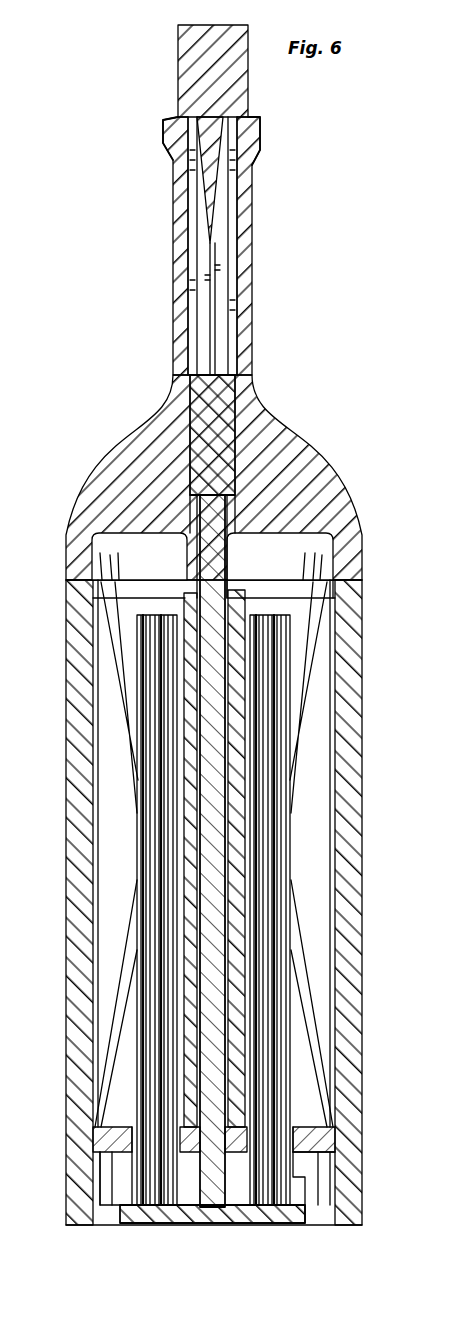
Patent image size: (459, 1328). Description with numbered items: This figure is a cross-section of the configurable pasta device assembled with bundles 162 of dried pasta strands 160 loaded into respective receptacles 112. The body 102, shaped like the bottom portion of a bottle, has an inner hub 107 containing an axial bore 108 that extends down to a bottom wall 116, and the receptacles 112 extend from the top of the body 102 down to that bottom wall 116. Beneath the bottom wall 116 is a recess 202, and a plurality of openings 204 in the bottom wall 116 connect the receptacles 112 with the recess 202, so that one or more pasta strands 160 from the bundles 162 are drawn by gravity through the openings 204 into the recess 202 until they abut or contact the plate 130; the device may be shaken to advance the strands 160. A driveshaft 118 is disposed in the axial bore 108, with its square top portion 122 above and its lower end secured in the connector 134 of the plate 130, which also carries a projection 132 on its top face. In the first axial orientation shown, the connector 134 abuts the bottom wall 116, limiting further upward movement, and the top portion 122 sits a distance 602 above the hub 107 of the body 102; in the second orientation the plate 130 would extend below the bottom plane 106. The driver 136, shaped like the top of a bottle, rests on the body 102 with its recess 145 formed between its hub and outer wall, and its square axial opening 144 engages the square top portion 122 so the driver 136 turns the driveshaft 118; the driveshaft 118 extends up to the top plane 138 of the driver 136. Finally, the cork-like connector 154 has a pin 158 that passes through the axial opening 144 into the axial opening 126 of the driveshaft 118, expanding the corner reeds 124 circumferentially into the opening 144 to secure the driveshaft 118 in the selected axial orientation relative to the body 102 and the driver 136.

The body 102 is at (368, 701).
The bottom plane 106 is at (77, 1225).
The inner hub 107 is at (187, 535).
The axial bore 108 is at (228, 935).
The receptacles 112 is at (133, 612).
The bottom wall 116 is at (92, 1128).
The driveshaft 118 is at (290, 1040).
The top portion 122 is at (190, 460).
The corner reeds 124 is at (190, 268).
The axial opening 126 is at (210, 305).
The plate 130 is at (104, 1210).
The projection 132 is at (300, 1192).
The connector 134 is at (295, 1150).
The driver 136 is at (291, 405).
The top plane 138 is at (178, 117).
The axial opening 144 is at (165, 144).
The recess 145 is at (140, 551).
The connector 154 is at (171, 89).
The pin 158 is at (232, 168).
The dried pasta strands 160 is at (138, 787).
The bundles 162 is at (106, 804).
The recess 202 is at (115, 1180).
The openings 204 is at (130, 1125).
The distance 602 is at (237, 560).